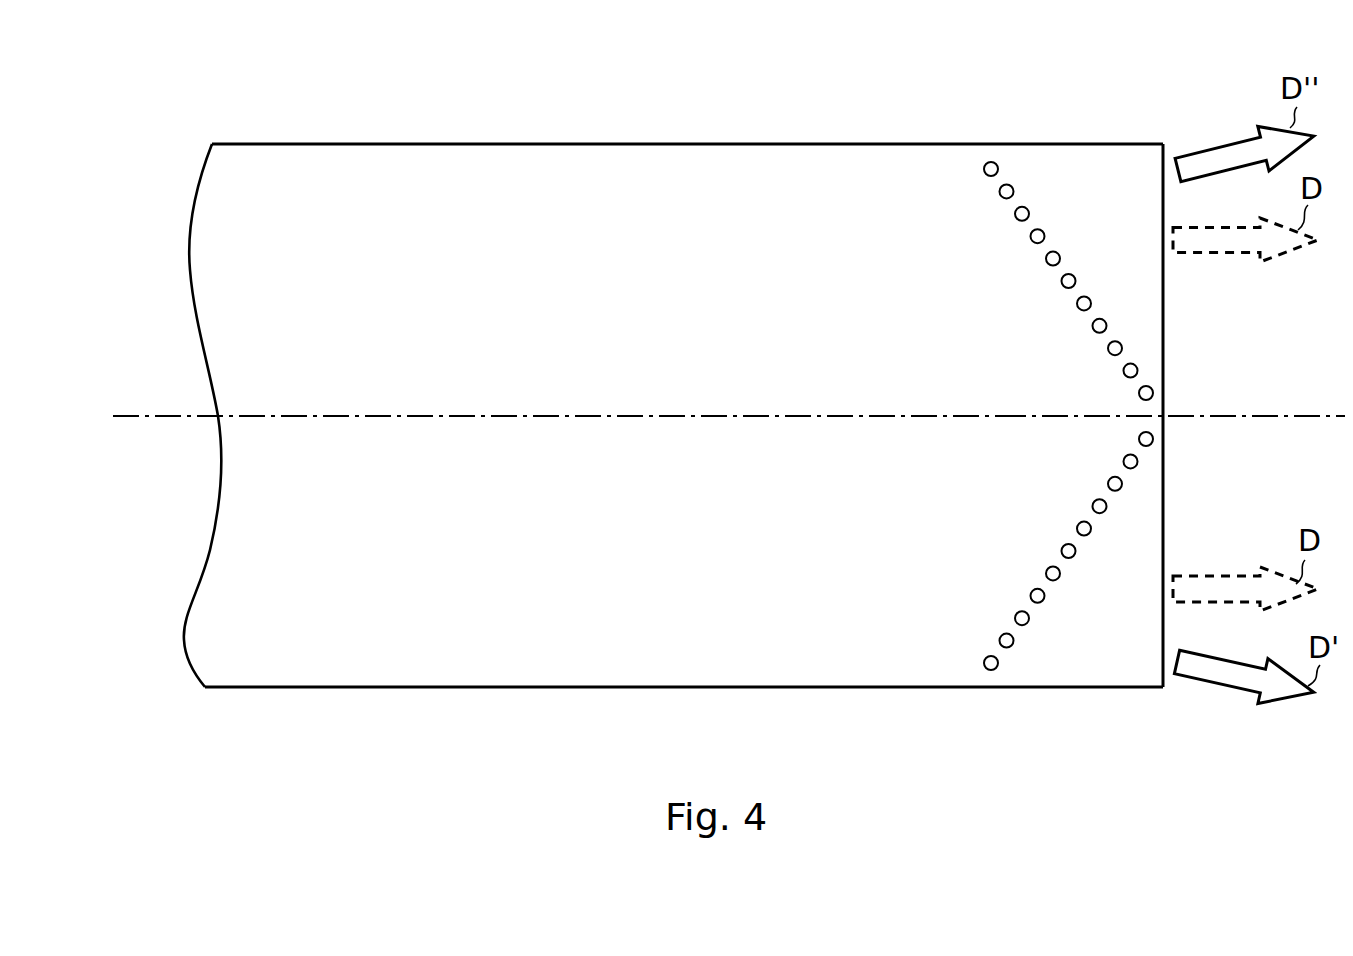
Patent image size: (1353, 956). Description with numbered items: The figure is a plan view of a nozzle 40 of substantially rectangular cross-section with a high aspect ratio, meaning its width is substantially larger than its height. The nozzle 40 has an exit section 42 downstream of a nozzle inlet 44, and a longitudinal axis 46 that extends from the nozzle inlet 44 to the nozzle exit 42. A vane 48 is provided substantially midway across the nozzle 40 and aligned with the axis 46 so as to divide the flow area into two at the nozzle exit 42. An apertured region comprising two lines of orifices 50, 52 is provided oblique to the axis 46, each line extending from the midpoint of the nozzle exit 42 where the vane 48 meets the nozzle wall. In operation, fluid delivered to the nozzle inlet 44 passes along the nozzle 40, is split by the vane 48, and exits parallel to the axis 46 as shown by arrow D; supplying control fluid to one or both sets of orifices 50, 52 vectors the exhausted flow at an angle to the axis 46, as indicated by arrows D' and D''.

The nozzle 40 is at (516, 94).
The exit section 42 is at (1212, 447).
The nozzle inlet 44 is at (119, 321).
The longitudinal axis 46 is at (1300, 416).
The vane 48 is at (705, 418).
The line of orifices 50 is at (990, 161).
The line of orifices 52 is at (991, 670).